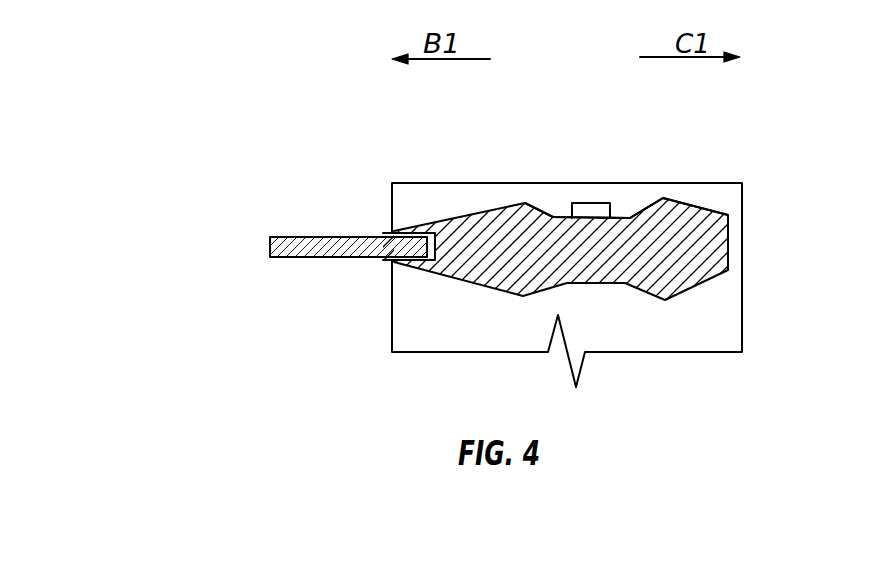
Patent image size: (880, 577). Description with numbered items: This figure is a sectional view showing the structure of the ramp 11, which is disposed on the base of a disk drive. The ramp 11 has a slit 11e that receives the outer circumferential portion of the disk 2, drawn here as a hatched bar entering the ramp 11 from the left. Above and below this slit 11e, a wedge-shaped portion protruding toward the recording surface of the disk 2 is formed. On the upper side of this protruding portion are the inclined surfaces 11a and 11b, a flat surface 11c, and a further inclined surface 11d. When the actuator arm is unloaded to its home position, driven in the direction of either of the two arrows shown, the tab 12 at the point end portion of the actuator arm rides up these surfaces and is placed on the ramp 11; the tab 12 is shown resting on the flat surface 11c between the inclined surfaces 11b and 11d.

The disk 2 is at (283, 237).
The ramp 11 is at (396, 191).
The inclined surface 11a is at (490, 211).
The inclined surface 11b is at (549, 215).
The flat surface 11c is at (618, 216).
The inclined surface 11d is at (641, 211).
The slit 11e is at (397, 263).
The tab 12 is at (590, 203).